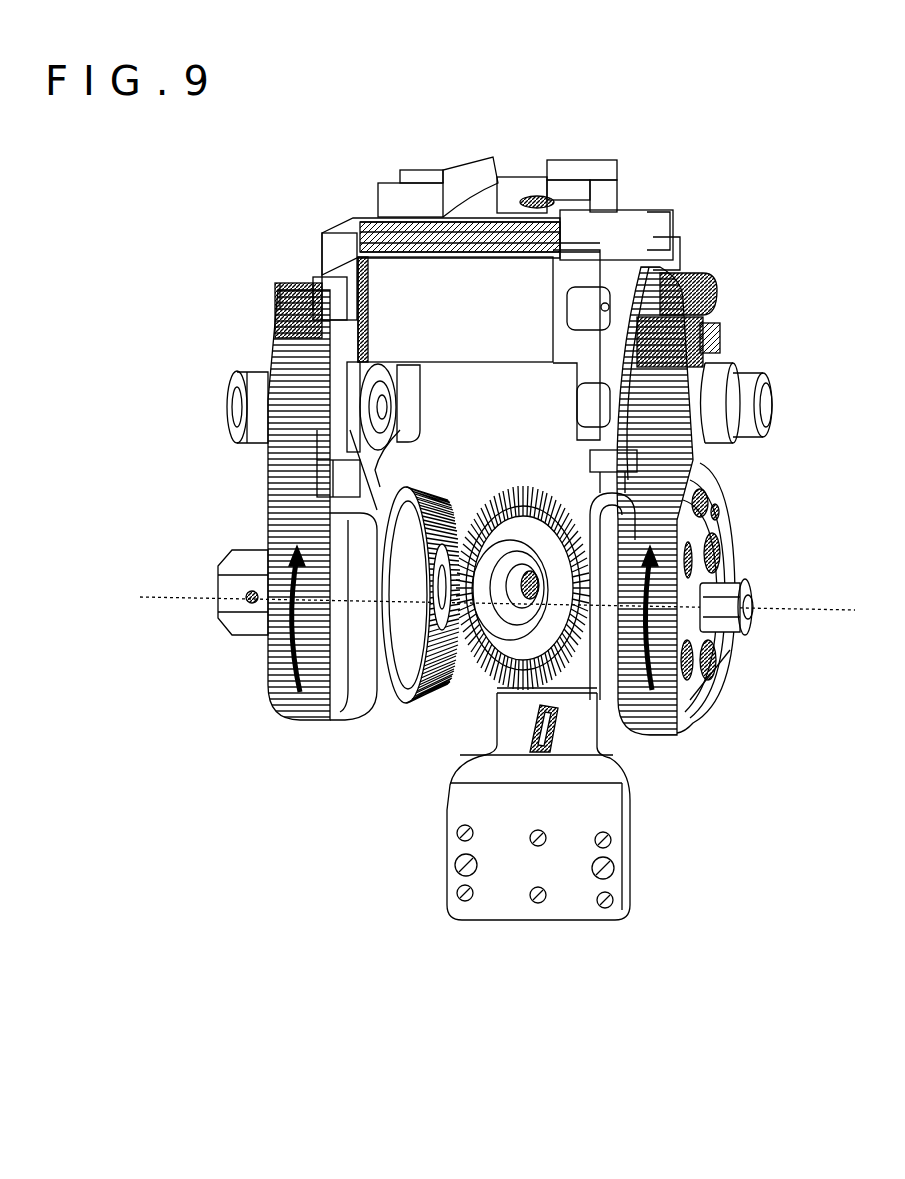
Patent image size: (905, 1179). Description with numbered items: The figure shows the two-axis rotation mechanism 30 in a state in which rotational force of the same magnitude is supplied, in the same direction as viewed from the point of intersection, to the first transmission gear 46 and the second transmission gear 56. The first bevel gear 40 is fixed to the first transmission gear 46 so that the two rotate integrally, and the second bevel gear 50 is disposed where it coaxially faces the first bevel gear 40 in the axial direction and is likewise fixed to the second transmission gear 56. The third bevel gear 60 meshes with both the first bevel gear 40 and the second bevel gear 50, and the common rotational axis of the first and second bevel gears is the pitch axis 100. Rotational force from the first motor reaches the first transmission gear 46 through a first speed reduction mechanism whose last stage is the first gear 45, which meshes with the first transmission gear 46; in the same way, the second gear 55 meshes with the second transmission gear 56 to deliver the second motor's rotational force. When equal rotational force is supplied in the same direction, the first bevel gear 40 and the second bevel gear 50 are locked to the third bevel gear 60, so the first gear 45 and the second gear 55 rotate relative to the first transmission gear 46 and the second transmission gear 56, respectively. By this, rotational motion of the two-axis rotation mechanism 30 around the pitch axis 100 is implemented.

The two-axis rotation mechanism 30 is at (537, 1014).
The first bevel gear 40 is at (607, 737).
The first gear 45 is at (713, 323).
The first transmission gear 46 is at (667, 733).
The second bevel gear 50 is at (417, 700).
The second gear 55 is at (280, 342).
The second transmission gear 56 is at (313, 727).
The third bevel gear 60 is at (510, 482).
The pitch axis 100 is at (170, 597).